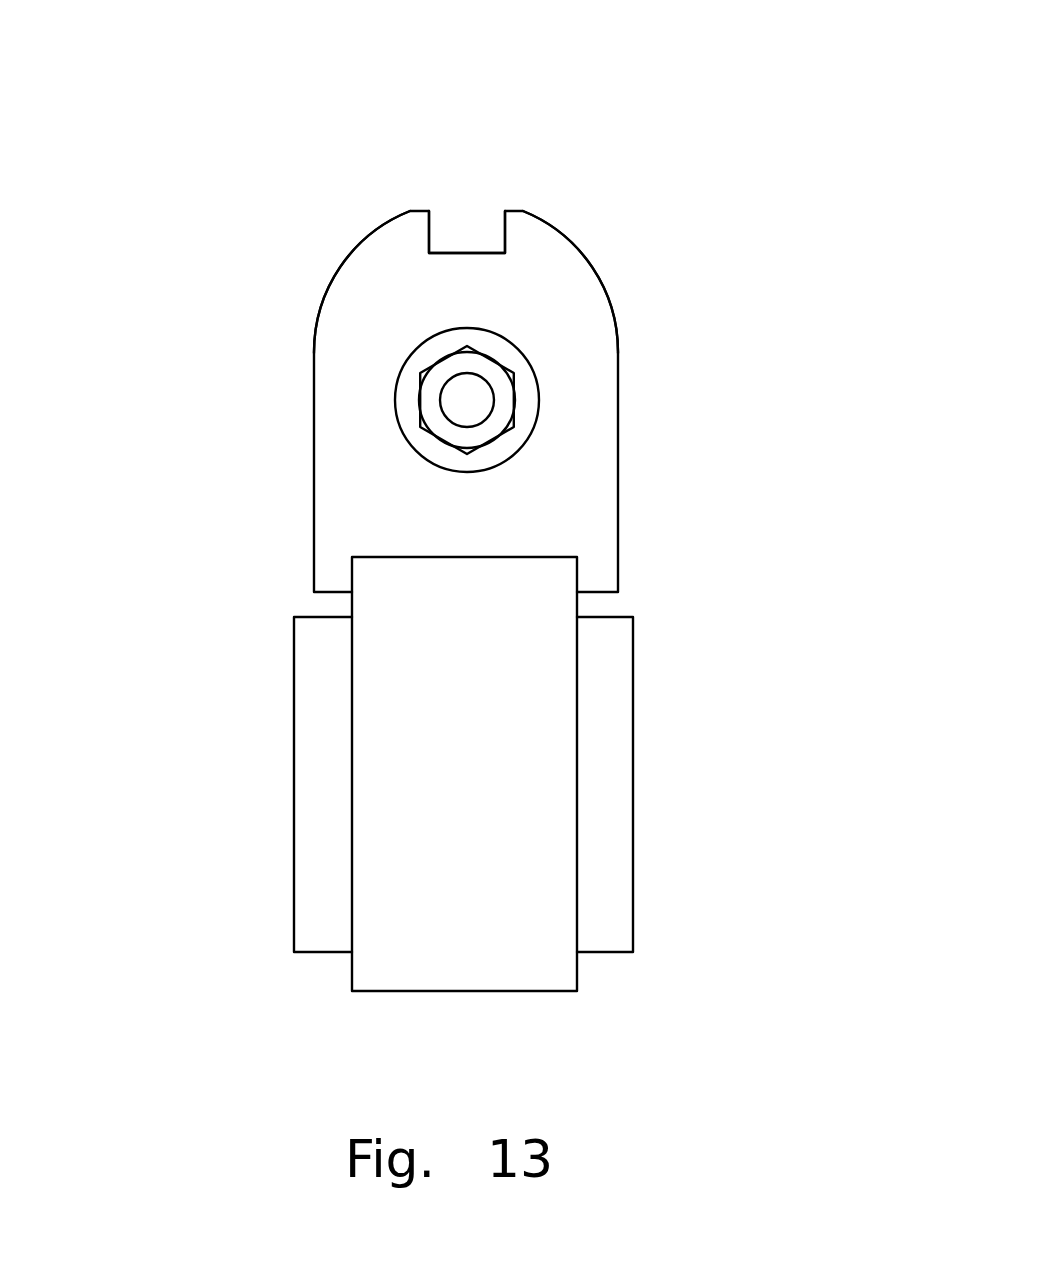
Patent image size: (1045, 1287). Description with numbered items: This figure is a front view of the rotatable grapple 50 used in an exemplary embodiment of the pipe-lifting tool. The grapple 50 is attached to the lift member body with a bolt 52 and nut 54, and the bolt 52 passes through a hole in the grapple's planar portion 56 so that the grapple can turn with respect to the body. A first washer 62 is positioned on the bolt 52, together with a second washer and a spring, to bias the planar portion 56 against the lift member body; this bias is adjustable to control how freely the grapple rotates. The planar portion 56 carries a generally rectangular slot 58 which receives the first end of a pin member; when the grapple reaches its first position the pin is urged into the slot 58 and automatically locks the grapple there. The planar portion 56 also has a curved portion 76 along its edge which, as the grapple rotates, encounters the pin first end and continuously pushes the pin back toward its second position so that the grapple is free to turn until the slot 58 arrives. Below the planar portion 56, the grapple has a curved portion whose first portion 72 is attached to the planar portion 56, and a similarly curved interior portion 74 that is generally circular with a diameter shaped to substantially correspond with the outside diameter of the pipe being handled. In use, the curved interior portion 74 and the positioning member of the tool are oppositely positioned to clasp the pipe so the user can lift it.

The rotatable grapple 50 is at (267, 382).
The bolt 52 is at (493, 388).
The nut 54 is at (517, 427).
The planar portion 56 is at (615, 540).
The generally rectangular slot 58 is at (469, 251).
The first washer 62 is at (413, 447).
The first portion 72 is at (385, 977).
The curved interior portion 74 is at (292, 750).
The curved portion 76 is at (598, 280).